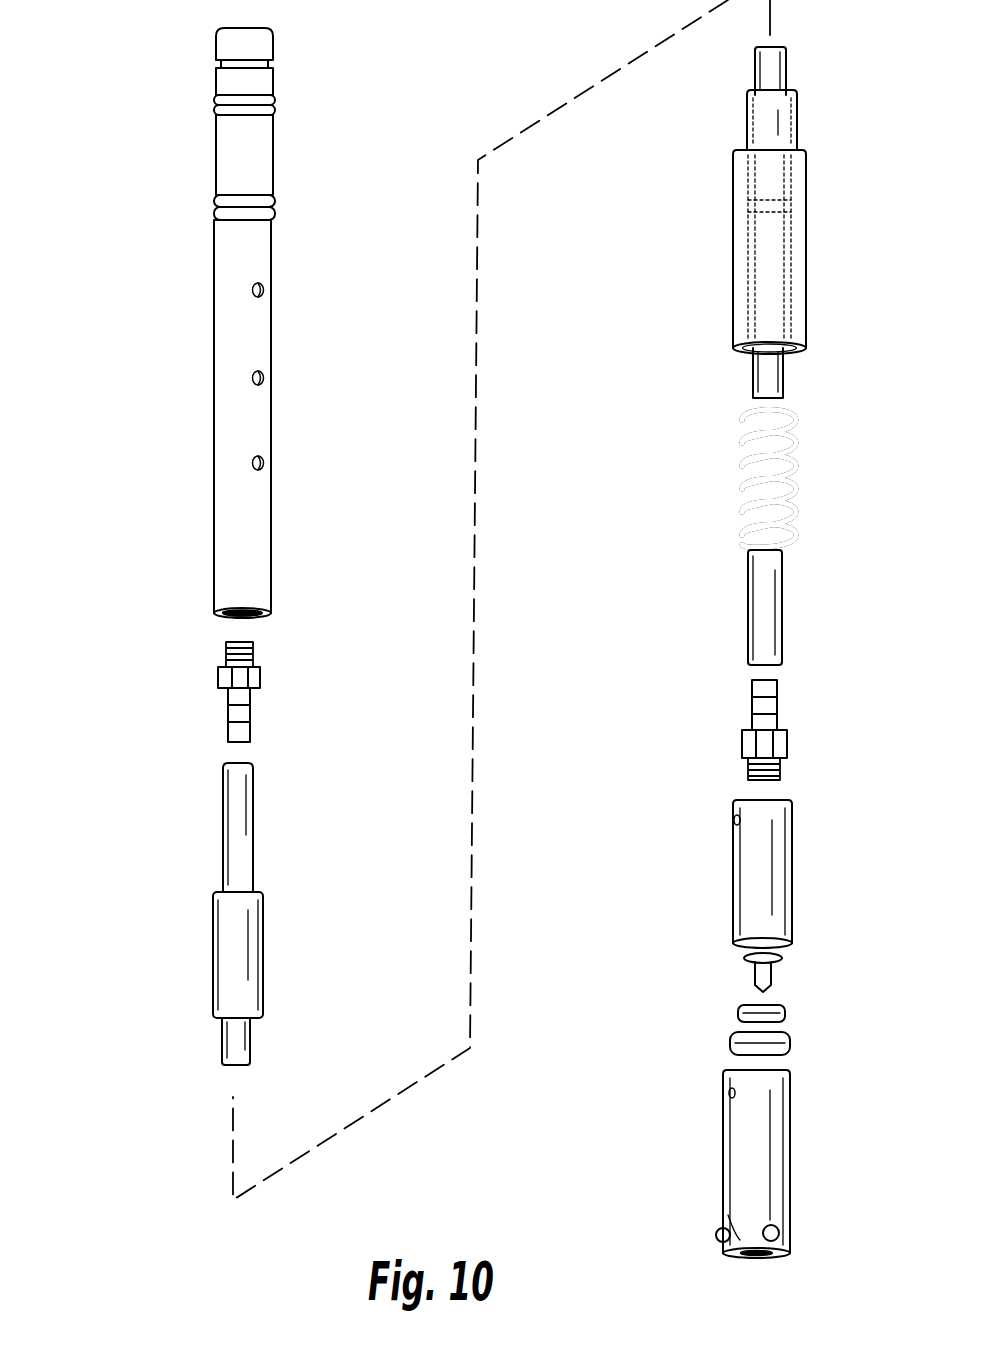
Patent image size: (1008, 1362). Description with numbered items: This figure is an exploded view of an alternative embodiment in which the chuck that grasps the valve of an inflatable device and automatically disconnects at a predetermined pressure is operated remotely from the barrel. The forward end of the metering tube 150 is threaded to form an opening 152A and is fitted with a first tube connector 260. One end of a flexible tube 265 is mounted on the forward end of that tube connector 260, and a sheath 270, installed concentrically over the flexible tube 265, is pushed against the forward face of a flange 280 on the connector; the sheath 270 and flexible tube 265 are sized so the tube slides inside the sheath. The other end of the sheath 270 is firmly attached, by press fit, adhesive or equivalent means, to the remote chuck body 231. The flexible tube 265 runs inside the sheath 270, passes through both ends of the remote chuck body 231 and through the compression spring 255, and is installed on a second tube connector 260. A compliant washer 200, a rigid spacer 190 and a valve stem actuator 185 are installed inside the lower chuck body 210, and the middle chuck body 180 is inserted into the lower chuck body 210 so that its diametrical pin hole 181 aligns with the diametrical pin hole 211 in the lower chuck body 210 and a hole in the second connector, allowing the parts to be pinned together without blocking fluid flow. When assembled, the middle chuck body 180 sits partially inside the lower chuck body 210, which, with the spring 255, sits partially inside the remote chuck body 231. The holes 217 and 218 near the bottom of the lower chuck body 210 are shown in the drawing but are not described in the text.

The metering tube 150 is at (205, 382).
The opening 152A is at (235, 617).
The tube connector 260 is at (200, 690).
The flange 280 is at (260, 676).
The flexible tube 265 is at (224, 790).
The sheath 270 is at (213, 980).
The remote chuck body 231 is at (730, 245).
The compression spring 255 is at (735, 480).
The middle chuck body 180 is at (730, 884).
The diametrical pin hole 181 is at (735, 819).
The valve stem actuator 185 is at (748, 968).
The rigid spacer 190 is at (738, 1012).
The compliant washer 200 is at (732, 1043).
The lower chuck body 210 is at (722, 1150).
The diametrical pin hole 211 is at (730, 1093).
The side holes 217 is at (785, 1232).
The side hole 218 is at (766, 1226).